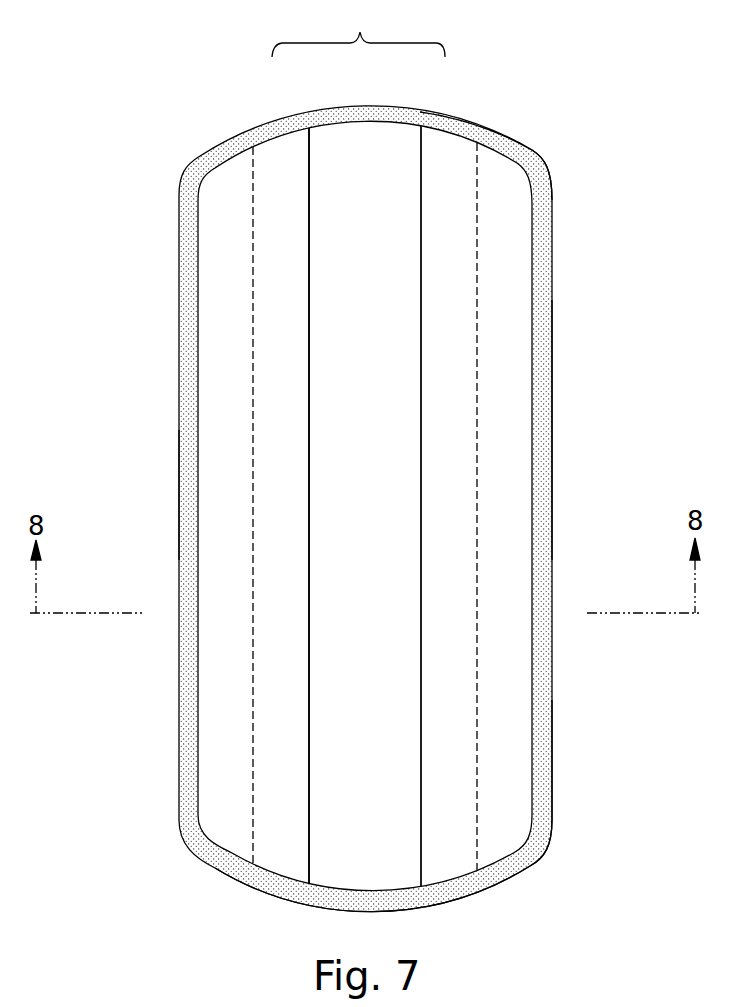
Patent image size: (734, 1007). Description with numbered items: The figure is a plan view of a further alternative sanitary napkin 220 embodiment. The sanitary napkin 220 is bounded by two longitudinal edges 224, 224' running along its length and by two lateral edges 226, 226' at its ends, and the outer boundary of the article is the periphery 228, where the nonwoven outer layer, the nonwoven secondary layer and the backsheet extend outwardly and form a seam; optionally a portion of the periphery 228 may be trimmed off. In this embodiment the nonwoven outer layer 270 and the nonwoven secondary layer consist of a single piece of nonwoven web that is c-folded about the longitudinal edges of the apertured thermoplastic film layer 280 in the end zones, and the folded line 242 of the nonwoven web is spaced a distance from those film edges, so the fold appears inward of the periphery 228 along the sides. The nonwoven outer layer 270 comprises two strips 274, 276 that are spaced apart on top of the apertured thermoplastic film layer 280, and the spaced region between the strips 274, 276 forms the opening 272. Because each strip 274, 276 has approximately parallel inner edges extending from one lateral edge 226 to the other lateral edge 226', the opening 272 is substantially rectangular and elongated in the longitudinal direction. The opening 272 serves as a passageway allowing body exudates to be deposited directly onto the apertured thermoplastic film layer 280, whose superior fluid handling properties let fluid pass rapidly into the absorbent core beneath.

The sanitary napkin 220 is at (186, 157).
The longitudinal edge 224 is at (601, 495).
The longitudinal edge 224' is at (122, 495).
The lateral edge 226 is at (372, 904).
The lateral edge 226' is at (507, 134).
The periphery 228 is at (553, 367).
The folded line 242 is at (553, 775).
The nonwoven outer layer 270 is at (358, 30).
The opening 272 is at (388, 460).
The strip 274 is at (283, 167).
The strip 276 is at (460, 160).
The apertured thermoplastic film layer 280 is at (390, 208).